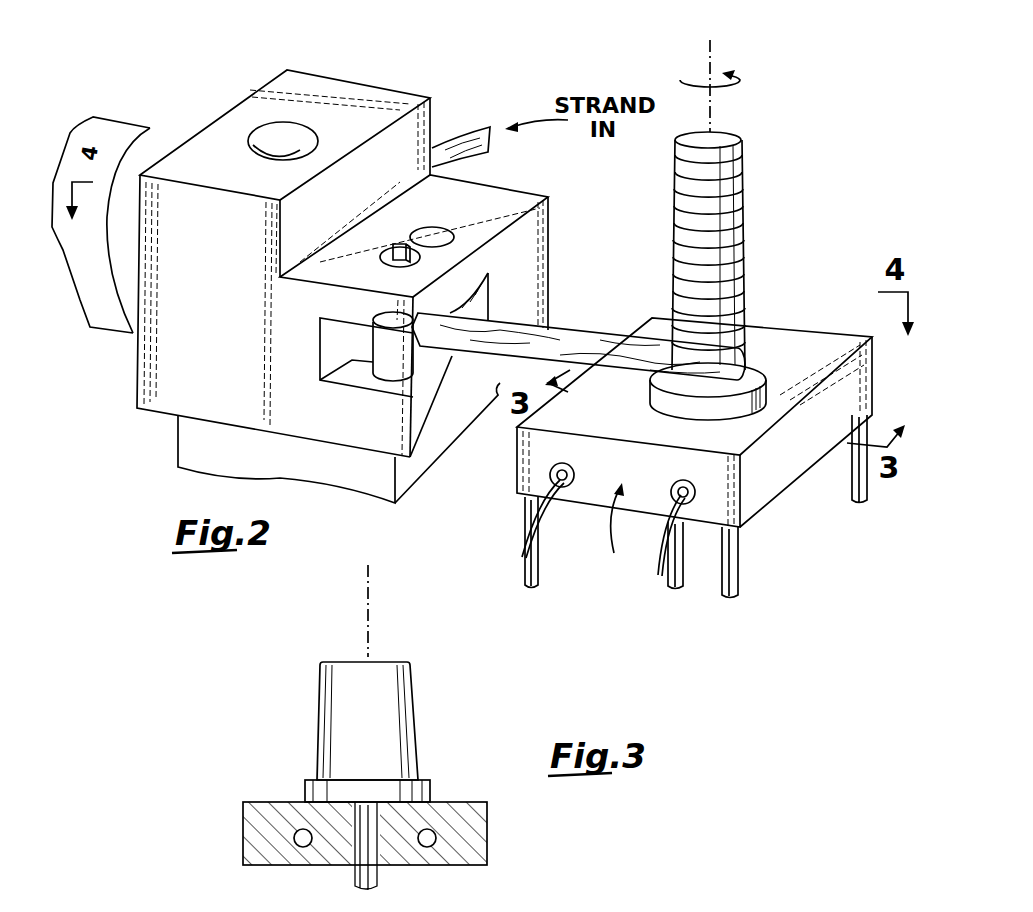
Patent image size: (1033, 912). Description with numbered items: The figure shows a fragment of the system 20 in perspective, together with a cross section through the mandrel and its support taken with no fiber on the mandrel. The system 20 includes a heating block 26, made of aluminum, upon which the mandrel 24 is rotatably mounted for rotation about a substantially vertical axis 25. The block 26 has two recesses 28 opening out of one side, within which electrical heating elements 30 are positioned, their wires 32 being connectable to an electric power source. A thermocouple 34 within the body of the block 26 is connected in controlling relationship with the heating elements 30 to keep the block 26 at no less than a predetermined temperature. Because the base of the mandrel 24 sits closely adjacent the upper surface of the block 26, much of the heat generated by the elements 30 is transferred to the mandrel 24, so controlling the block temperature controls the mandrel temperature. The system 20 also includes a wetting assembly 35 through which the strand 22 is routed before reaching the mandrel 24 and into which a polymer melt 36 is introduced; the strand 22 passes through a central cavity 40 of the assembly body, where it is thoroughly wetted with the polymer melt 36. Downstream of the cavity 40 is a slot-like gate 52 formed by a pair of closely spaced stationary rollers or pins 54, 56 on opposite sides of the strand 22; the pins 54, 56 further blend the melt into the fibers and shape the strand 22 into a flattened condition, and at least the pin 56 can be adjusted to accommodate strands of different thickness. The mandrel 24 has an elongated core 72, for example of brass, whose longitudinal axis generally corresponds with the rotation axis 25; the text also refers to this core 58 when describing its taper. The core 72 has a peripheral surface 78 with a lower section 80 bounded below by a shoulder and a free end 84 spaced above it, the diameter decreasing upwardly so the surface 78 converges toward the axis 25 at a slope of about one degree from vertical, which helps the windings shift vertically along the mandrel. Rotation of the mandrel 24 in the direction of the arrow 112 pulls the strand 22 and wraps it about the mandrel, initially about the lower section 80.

In FIG. 2, the system 20 is at (805, 147).
In FIG. 2, the strand 22 is at (473, 126).
In FIG. 2, the mandrel 24 is at (767, 373).
In FIG. 3, the mandrel 24 is at (432, 787).
In FIG. 2, the vertical axis 25 is at (713, 50).
In FIG. 3, the vertical axis 25 is at (368, 597).
In FIG. 3, the heating block 26 is at (488, 823).
In FIG. 2, the recesses 28 is at (565, 462).
In FIG. 2, the electrical heating elements 30 is at (550, 473).
In FIG. 2, the wires 32 is at (520, 542).
In FIG. 2, the thermocouple 34 is at (633, 503).
In FIG. 2, the wetting assembly 35 is at (375, 70).
In FIG. 2, the polymer melt 36 is at (263, 145).
In FIG. 2, the central cavity 40 is at (307, 138).
In FIG. 2, the gate 52 is at (383, 316).
In FIG. 2, the pin 54 is at (489, 275).
In FIG. 2, the pin 56 is at (350, 378).
In FIG. 2, the core 58 is at (132, 98).
In FIG. 3, the core 72 is at (320, 683).
In FIG. 3, the peripheral surface 78 is at (318, 728).
In FIG. 3, the lower section 80 is at (317, 768).
In FIG. 2, the free end 84 is at (745, 248).
In FIG. 3, the free end 84 is at (390, 660).
In FIG. 2, the arrow 112 is at (735, 76).